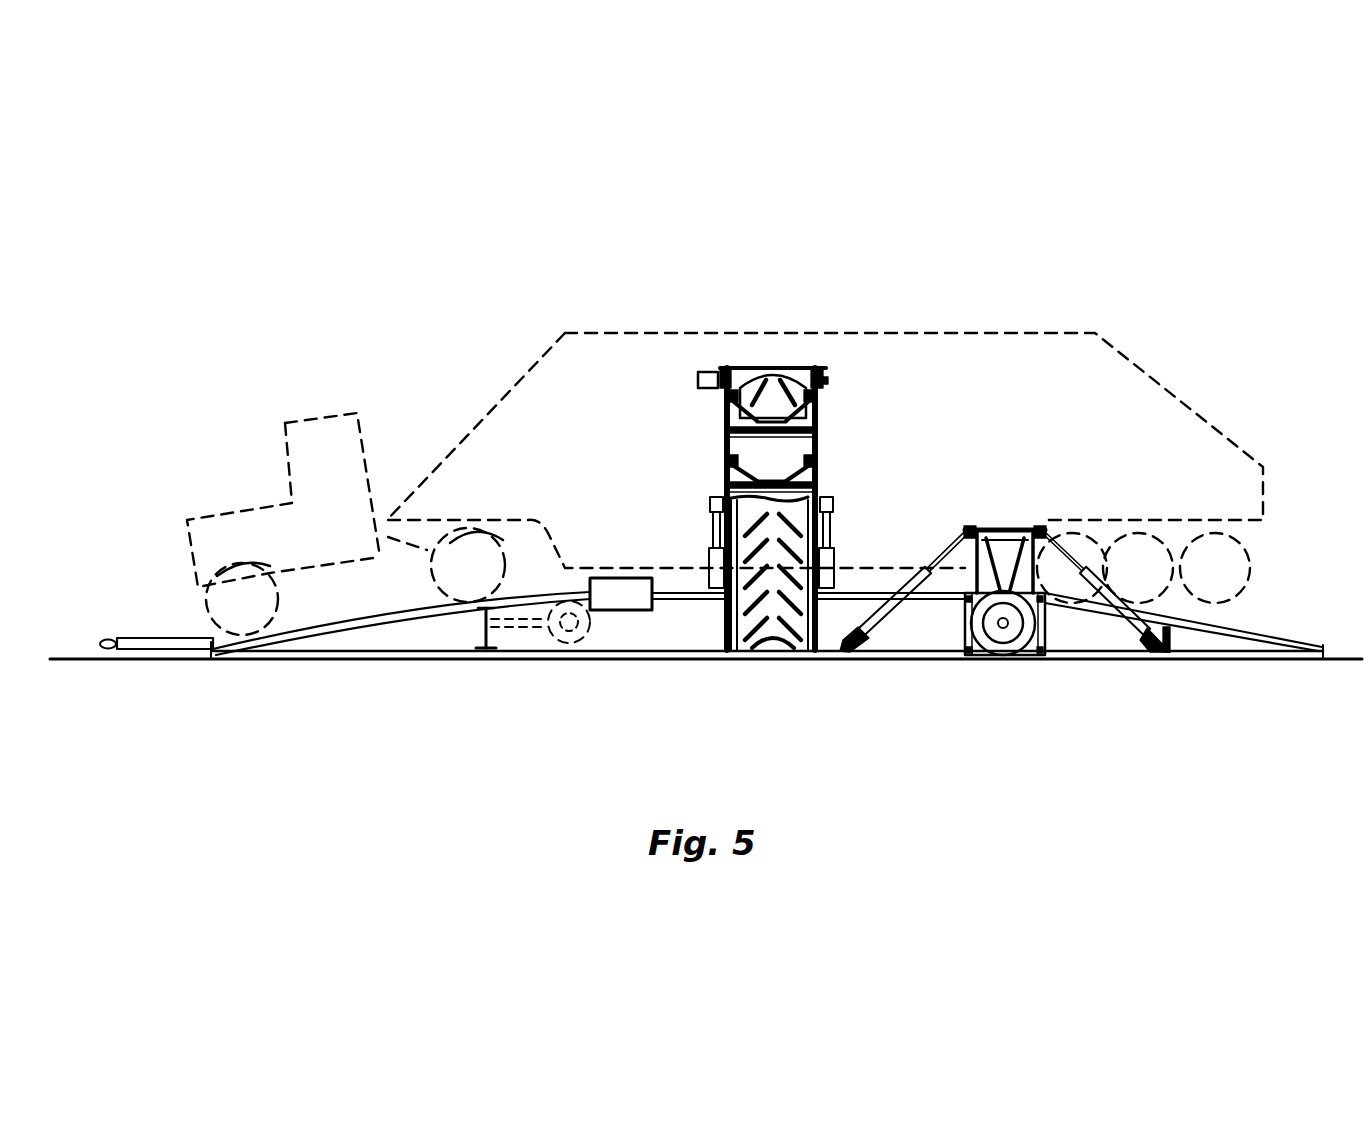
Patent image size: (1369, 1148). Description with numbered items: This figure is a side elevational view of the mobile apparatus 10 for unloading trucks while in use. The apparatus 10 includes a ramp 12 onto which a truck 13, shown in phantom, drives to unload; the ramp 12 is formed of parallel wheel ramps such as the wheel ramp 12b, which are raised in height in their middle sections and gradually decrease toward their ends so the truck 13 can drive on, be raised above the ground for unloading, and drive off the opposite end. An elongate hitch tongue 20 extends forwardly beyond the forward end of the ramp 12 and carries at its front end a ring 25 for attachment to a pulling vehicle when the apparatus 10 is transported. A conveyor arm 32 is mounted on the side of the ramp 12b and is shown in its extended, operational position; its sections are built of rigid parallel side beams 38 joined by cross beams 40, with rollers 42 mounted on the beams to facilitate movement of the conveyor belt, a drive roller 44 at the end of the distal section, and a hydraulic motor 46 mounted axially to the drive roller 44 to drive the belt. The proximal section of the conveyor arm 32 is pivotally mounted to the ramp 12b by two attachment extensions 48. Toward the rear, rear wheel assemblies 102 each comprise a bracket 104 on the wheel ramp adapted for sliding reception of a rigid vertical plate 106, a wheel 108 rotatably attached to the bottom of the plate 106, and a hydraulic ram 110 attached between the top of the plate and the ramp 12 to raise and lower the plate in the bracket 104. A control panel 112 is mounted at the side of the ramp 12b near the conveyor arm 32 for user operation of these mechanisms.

The mobile apparatus 10 is at (940, 424).
The ramp 12 is at (614, 665).
The wheel ramp 12b is at (400, 630).
The truck 13 is at (937, 333).
The hitch tongue 20 is at (172, 638).
The ring 25 is at (105, 638).
The conveyor arm 32 is at (833, 533).
The side beams 38 is at (722, 422).
The cross beams 40 is at (740, 448).
The rollers 42 is at (773, 395).
The drive roller 44 is at (814, 370).
The hydraulic motor 46 is at (710, 372).
The attachment extensions 48 is at (698, 650).
The rear wheel assemblies 102 is at (1040, 515).
The bracket 104 is at (1043, 650).
The vertical plate 106 is at (1003, 527).
The wheel 108 is at (998, 650).
The hydraulic ram 110 is at (925, 650).
The control panel 112 is at (620, 578).